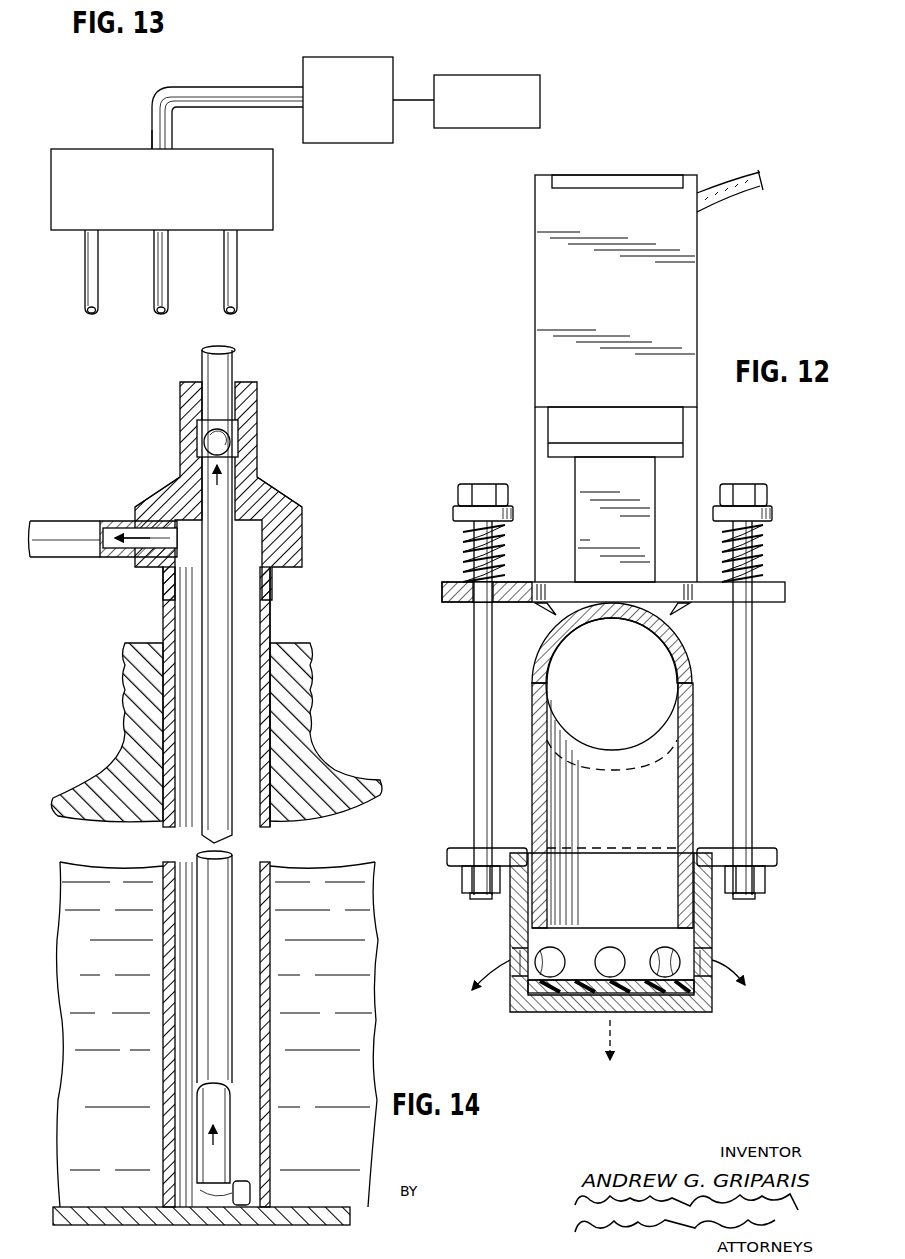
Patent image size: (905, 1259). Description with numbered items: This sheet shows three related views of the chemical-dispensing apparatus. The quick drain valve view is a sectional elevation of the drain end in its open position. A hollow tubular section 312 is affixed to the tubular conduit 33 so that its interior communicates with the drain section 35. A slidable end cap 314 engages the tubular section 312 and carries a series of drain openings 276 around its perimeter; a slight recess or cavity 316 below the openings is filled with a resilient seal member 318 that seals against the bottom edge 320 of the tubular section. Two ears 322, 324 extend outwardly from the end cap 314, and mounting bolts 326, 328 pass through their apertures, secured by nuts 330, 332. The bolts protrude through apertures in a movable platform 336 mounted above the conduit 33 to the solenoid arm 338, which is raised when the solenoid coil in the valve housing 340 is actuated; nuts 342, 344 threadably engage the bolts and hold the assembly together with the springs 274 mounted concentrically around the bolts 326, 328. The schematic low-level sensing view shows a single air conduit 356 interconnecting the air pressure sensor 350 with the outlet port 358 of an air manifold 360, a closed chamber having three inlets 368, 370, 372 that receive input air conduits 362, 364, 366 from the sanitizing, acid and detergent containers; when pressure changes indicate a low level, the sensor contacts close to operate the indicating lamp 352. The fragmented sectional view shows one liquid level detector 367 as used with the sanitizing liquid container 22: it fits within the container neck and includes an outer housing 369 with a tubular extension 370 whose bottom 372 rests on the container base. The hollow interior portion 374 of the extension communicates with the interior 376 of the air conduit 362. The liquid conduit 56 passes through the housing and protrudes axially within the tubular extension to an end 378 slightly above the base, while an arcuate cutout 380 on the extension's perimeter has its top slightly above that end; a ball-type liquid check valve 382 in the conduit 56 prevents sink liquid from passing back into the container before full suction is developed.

In FIG. 14, the sanitizing liquid container 22 is at (110, 740).
In FIG. 12, the tubular conduit 33 is at (548, 635).
In FIG. 12, the drain section 35 is at (668, 670).
In FIG. 14, the liquid conduit 56 is at (235, 370).
In FIG. 12, the springs 274 is at (463, 551).
In FIG. 12, the drain openings 276 is at (628, 927).
In FIG. 12, the hollow tubular section 312 is at (690, 774).
In FIG. 12, the slidable end cap 314 is at (712, 1002).
In FIG. 12, the recess or cavity 316 is at (570, 995).
In FIG. 12, the resilient seal member 318 is at (650, 997).
In FIG. 12, the bottom edge 320 is at (645, 937).
In FIG. 12, the ear 322 is at (460, 848).
In FIG. 12, the ear 324 is at (777, 862).
In FIG. 12, the mounting bolt 326 is at (473, 730).
In FIG. 12, the mounting bolt 328 is at (752, 784).
In FIG. 12, the nut 330 is at (462, 886).
In FIG. 12, the nut 332 is at (765, 882).
In FIG. 12, the movable platform 336 is at (785, 594).
In FIG. 12, the solenoid arm 338 is at (658, 478).
In FIG. 12, the valve housing 340 is at (697, 282).
In FIG. 12, the nut 342 is at (460, 494).
In FIG. 12, the nut 344 is at (745, 494).
In FIG. 13, the air pressure sensor 350 is at (355, 143).
In FIG. 13, the indicating lamp 352 is at (448, 75).
In FIG. 13, the air conduit 356 is at (163, 95).
In FIG. 13, the outlet port 358 is at (150, 147).
In FIG. 13, the air manifold 360 is at (222, 157).
In FIG. 13, the air conduit 362 is at (85, 298).
In FIG. 14, the air conduit 362 is at (80, 500).
In FIG. 13, the air conduit 364 is at (156, 291).
In FIG. 13, the air conduit 366 is at (237, 298).
In FIG. 14, the liquid level detector 367 is at (157, 465).
In FIG. 13, the manifold inlet / container neck 368 is at (85, 250).
In FIG. 14, the manifold inlet / container neck 368 is at (275, 648).
In FIG. 14, the outer housing 369 is at (262, 480).
In FIG. 13, the tubular extension 370 is at (154, 252).
In FIG. 14, the tubular extension 370 is at (166, 622).
In FIG. 13, the bottom edge of tubular extension 372 is at (237, 248).
In FIG. 14, the bottom edge of tubular extension 372 is at (165, 1207).
In FIG. 14, the hollow interior portion 374 is at (183, 830).
In FIG. 14, the interior of air conduit 376 is at (160, 508).
In FIG. 14, the end of liquid conduit 378 is at (228, 1172).
In FIG. 14, the arcuate cutout 380 is at (250, 1192).
In FIG. 14, the ball-type liquid check valve 382 is at (240, 429).